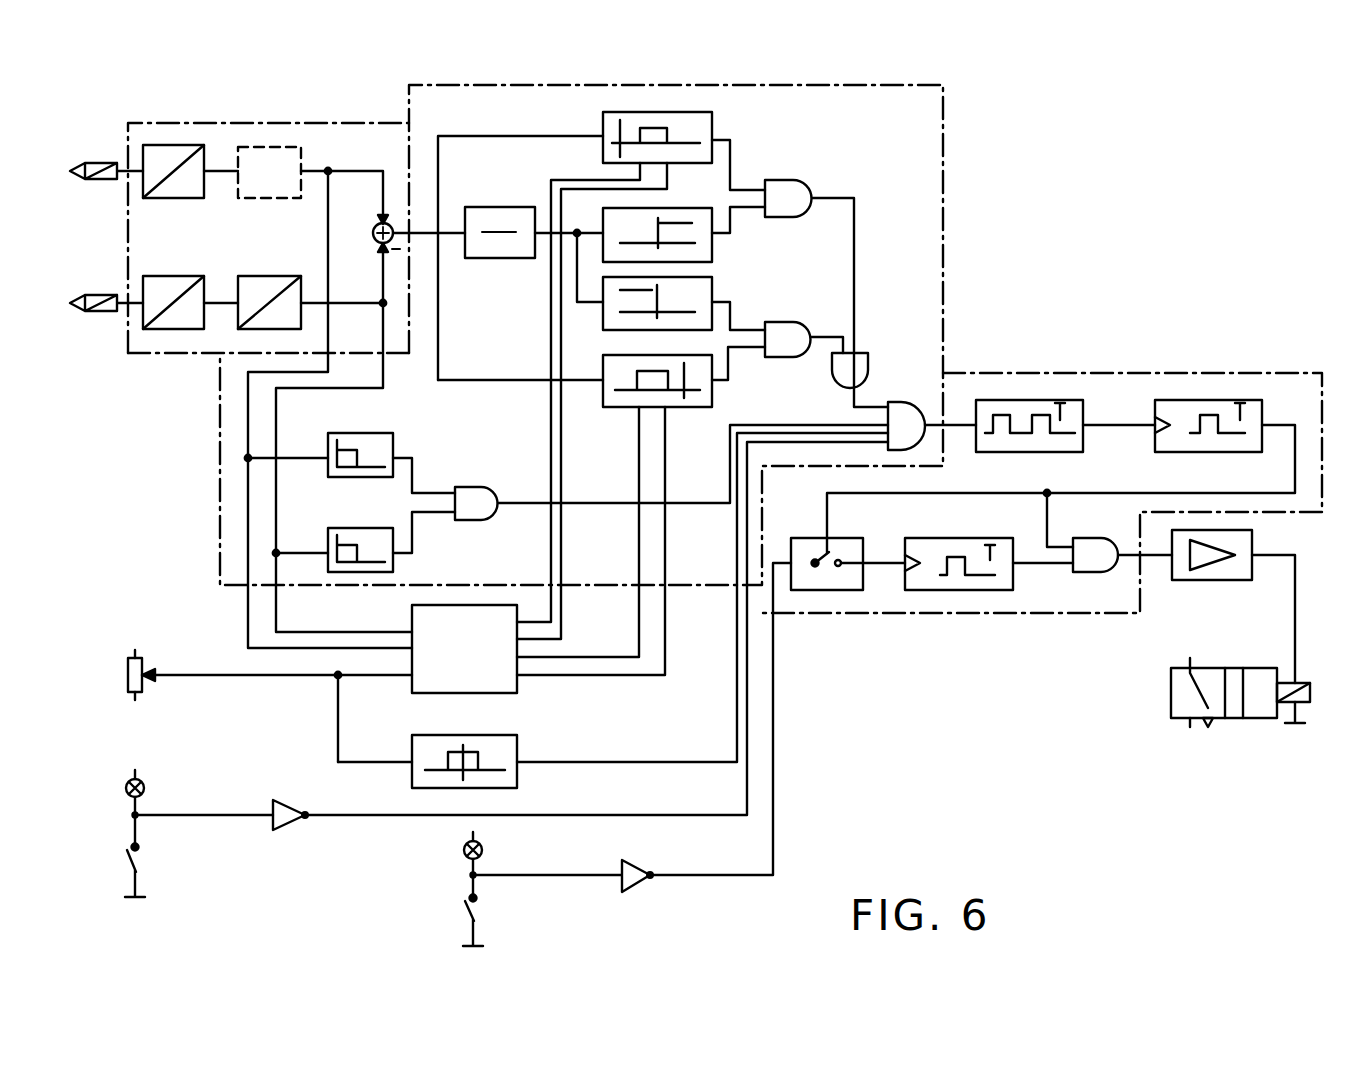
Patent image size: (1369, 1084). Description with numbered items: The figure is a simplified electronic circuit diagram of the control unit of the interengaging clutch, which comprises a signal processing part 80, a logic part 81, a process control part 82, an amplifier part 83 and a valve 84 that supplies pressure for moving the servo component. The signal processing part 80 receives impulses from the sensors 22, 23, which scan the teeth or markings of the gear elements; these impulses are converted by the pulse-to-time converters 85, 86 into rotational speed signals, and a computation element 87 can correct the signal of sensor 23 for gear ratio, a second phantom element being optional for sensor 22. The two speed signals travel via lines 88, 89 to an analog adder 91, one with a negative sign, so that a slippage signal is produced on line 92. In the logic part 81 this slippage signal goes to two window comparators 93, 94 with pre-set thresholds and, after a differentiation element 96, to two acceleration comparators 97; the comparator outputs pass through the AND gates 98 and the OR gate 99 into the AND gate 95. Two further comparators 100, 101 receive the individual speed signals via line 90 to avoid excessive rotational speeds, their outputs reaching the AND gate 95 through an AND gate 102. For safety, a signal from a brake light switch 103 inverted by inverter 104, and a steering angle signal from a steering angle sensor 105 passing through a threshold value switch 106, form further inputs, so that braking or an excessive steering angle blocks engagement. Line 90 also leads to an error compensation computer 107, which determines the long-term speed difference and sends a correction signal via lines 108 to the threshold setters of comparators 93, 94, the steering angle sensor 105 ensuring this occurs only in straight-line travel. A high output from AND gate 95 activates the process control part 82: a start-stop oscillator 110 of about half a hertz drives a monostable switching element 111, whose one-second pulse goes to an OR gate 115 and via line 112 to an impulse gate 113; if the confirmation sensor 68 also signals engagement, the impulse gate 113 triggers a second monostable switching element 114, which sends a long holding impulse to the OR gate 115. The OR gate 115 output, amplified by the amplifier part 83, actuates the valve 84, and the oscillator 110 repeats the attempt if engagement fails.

The sensor 22 is at (106, 190).
The sensor 23 is at (106, 291).
The confirmation sensor 68 is at (627, 754).
The signal processing part 80 is at (268, 223).
The logic part 81 is at (598, 335).
The process control part 82 is at (1042, 479).
The amplifier part 83 is at (1233, 599).
The valve 84 is at (1255, 691).
The pulse-to-time converter 85 is at (173, 186).
The pulse-to-time converter 86 is at (190, 290).
The computation element 87 is at (269, 290).
The line 88 is at (356, 184).
The line 89 is at (350, 274).
The line 90 is at (328, 409).
The analog adder 91 is at (369, 224).
The line 92 is at (427, 232).
The window comparator 93 is at (601, 373).
The window comparator 94 is at (601, 511).
The AND gate 95 is at (640, 595).
The differentiation element 96 is at (534, 241).
The acceleration comparator 97 is at (684, 268).
The AND gate 98 is at (786, 217).
The OR gate 99 is at (864, 357).
The comparator 100 is at (351, 450).
The comparator 101 is at (365, 537).
The AND gate 102 is at (474, 489).
The brake light switch 103 is at (154, 833).
The inverter 104 is at (223, 801).
The steering angle sensor 105 is at (263, 691).
The threshold value switch 106 is at (427, 748).
The error compensation computer 107 is at (464, 649).
The lines 108 is at (586, 617).
The start-stop oscillator 110 is at (1065, 411).
The monostable switching element 111 is at (1208, 411).
The line 112 is at (1061, 489).
The impulse gate 113 is at (848, 551).
The monostable switching element 114 is at (989, 551).
The OR gate 115 is at (1122, 542).